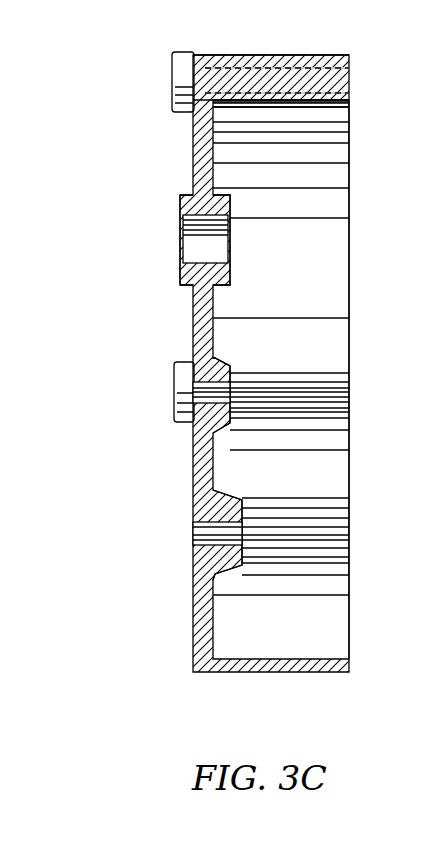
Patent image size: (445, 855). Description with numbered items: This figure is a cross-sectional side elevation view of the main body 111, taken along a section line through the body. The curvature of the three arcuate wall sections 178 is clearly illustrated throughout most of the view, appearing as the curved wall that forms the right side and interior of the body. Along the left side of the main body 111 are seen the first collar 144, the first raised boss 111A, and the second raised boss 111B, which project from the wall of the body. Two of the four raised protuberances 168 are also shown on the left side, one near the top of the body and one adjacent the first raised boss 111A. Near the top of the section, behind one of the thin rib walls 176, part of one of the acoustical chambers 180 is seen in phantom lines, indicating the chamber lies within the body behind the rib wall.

The main body 111 is at (225, 673).
The first raised boss 111A is at (214, 360).
The second raised boss 111B is at (231, 497).
The first collar 144 is at (187, 284).
The raised protuberances 168 is at (178, 62).
The thin rib walls 176 is at (342, 102).
The arcuate wall sections 178 is at (383, 630).
The acoustical chambers 180 is at (338, 73).